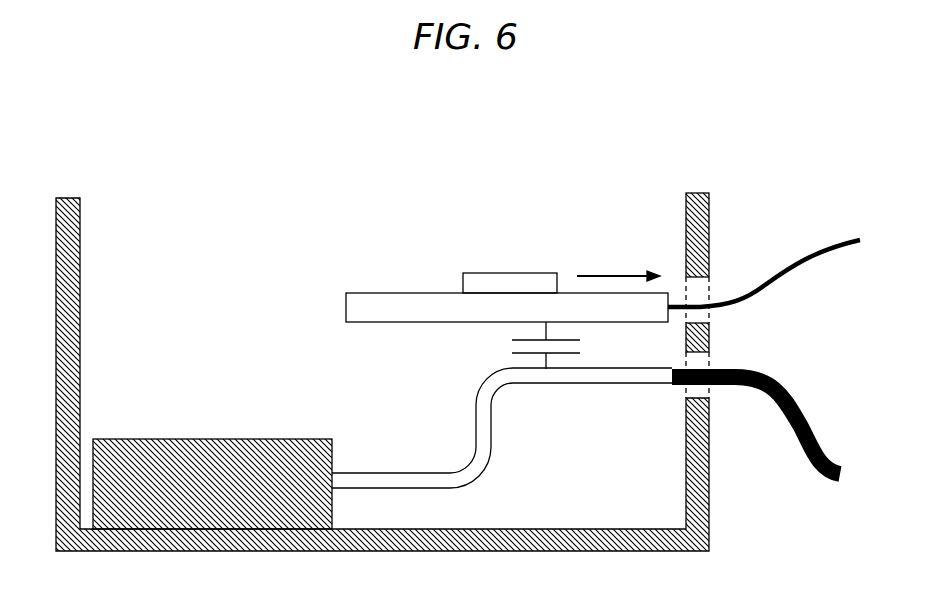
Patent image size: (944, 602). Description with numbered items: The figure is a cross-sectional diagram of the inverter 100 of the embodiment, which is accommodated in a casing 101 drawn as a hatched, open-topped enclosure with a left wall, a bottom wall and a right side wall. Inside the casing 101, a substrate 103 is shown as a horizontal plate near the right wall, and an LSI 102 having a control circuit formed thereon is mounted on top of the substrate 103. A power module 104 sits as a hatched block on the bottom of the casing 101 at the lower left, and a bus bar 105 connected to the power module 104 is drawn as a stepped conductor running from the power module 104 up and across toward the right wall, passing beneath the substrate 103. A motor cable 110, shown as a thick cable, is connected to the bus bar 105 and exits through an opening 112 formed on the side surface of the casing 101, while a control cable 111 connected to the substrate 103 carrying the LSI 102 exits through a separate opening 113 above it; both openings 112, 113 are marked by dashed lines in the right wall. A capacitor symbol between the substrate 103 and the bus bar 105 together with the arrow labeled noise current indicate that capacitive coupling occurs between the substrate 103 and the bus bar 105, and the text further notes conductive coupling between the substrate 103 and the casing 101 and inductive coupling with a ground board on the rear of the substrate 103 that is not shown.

The inverter 100 is at (178, 161).
The casing 101 is at (80, 257).
The LSI 102 is at (505, 273).
The substrate 103 is at (403, 293).
The power module 104 is at (210, 439).
The bus bar 105 is at (491, 428).
The motor cable 110 is at (800, 408).
The control cable 111 is at (805, 247).
The opening 112 is at (709, 360).
The opening 113 is at (709, 318).